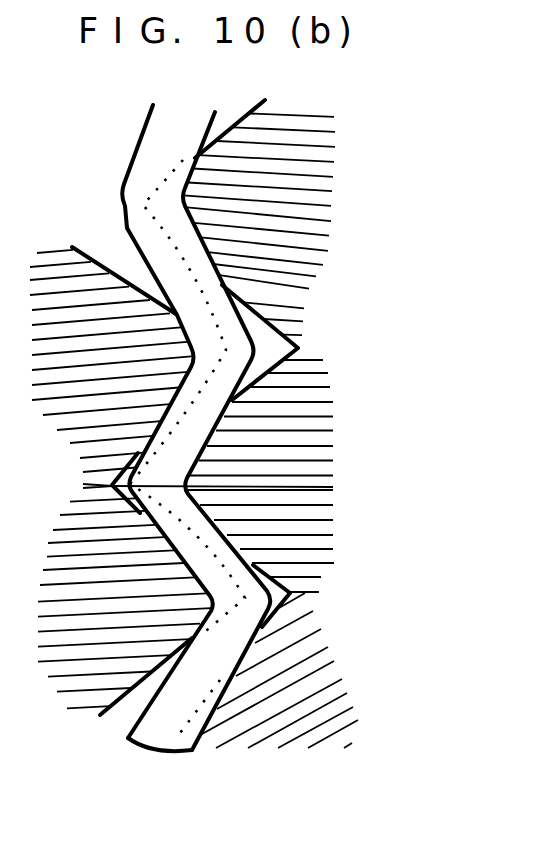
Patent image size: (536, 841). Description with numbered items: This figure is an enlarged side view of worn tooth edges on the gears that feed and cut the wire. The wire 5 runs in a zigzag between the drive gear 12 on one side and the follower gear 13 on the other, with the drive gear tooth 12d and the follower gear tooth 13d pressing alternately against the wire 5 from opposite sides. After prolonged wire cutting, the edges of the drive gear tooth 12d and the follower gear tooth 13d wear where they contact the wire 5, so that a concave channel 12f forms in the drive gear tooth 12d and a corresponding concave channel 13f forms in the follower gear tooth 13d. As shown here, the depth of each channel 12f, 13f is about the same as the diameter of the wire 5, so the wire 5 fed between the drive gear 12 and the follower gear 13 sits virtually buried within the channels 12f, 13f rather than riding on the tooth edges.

The wire 5 is at (163, 140).
The drive gear 12 is at (388, 498).
The follower gear 13 is at (56, 498).
The drive gear tooth 12d is at (148, 203).
The concave channel 12f is at (180, 205).
The follower gear tooth 13d is at (230, 350).
The concave channel 13f is at (207, 345).